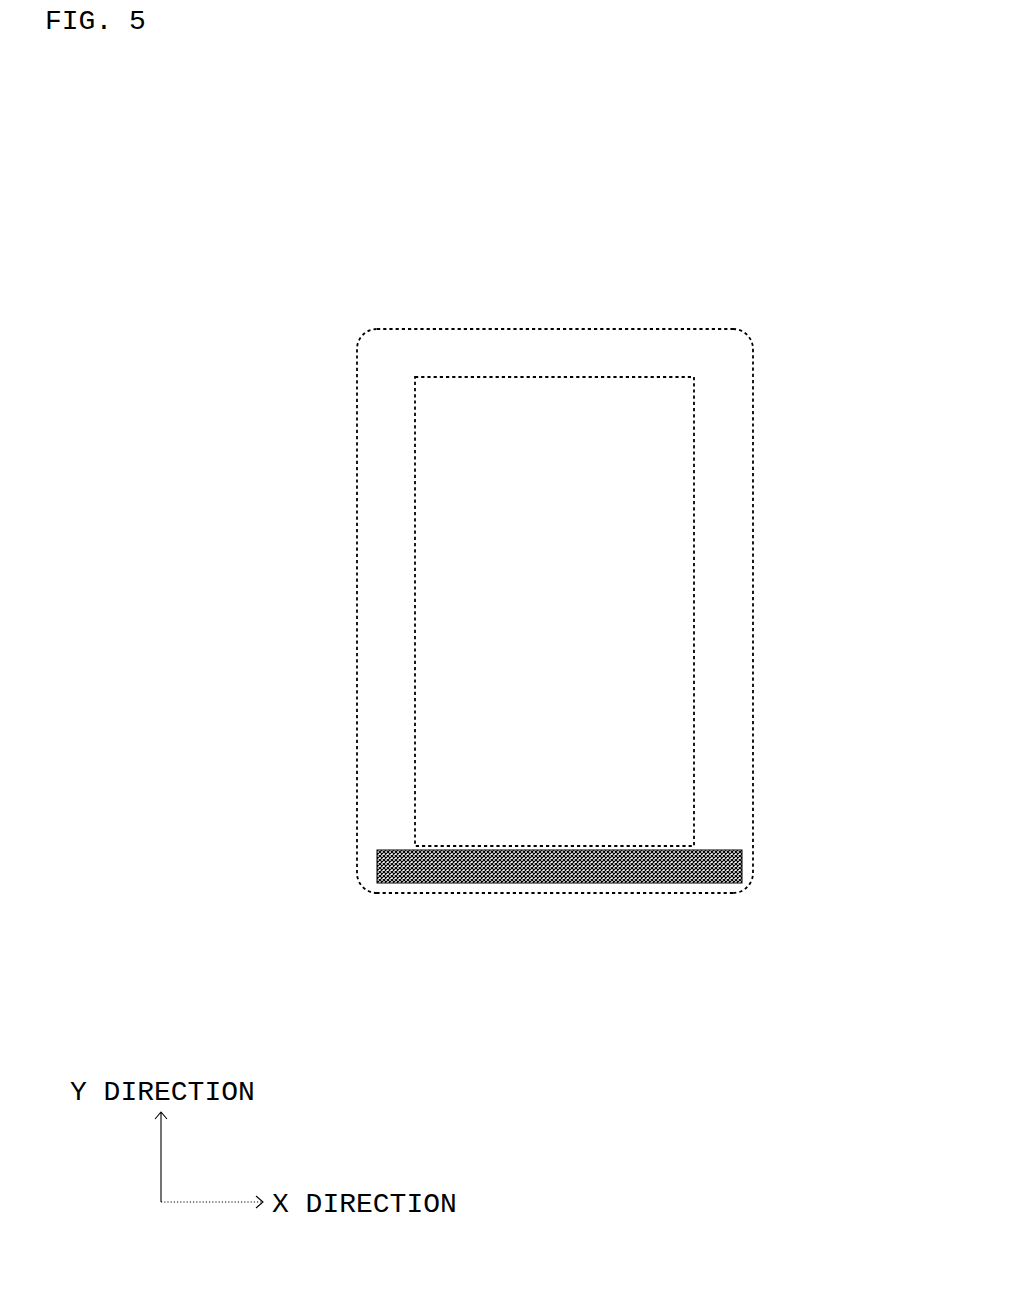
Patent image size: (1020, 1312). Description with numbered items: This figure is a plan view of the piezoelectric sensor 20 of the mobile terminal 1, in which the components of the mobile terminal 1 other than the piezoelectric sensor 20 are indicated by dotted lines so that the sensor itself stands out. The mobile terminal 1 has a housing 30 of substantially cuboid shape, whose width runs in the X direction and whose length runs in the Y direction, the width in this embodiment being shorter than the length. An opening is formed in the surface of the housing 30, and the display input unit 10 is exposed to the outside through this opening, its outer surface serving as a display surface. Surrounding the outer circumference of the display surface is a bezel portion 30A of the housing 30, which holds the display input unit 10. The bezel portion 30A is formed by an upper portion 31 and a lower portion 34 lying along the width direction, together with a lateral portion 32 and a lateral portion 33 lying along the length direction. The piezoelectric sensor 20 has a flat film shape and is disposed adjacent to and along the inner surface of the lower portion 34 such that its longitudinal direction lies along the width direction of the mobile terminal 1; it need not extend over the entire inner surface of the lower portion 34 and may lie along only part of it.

The mobile terminal 1 is at (796, 191).
The display input unit 10 is at (696, 467).
The piezoelectric sensor 20 is at (745, 888).
The housing 30 is at (557, 656).
The bezel portion 30A is at (722, 330).
The upper portion 31 is at (583, 340).
The lateral portion 32 is at (378, 538).
The lateral portion 33 is at (730, 556).
The lower portion 34 is at (644, 891).